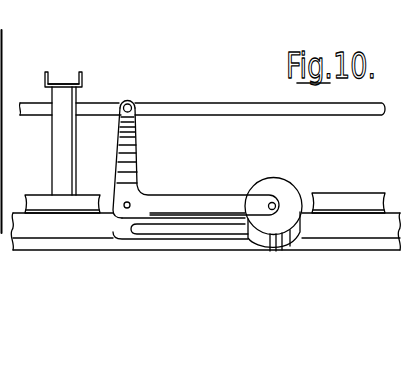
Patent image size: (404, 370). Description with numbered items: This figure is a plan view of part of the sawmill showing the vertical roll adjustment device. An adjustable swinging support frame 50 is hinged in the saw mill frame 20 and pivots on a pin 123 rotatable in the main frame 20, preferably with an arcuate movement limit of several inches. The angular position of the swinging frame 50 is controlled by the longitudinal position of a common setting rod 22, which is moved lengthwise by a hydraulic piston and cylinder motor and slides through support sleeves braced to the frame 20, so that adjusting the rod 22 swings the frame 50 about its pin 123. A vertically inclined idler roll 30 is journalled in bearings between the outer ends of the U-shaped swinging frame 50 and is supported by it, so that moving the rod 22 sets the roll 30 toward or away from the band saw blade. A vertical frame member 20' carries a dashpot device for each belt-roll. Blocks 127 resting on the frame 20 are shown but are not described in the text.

The saw mill frame 20 is at (205, 254).
The vertical frame member 20' is at (92, 122).
The setting rod 22 is at (226, 105).
The blocks 127 is at (40, 200).
The swinging support frame 50 is at (122, 230).
The pin 123 is at (131, 204).
The vertically inclined idler roll 30 is at (265, 243).